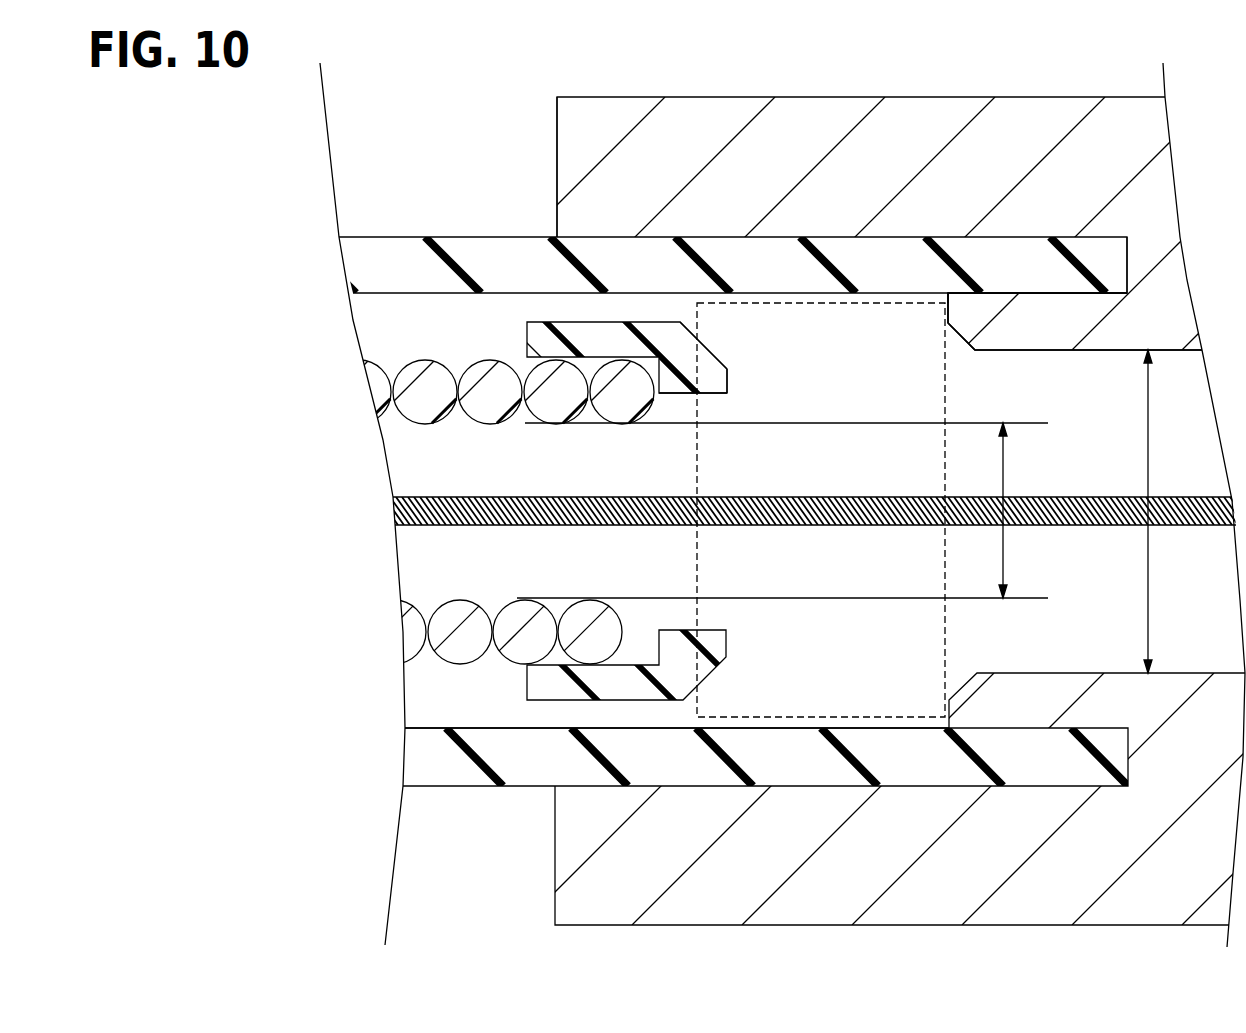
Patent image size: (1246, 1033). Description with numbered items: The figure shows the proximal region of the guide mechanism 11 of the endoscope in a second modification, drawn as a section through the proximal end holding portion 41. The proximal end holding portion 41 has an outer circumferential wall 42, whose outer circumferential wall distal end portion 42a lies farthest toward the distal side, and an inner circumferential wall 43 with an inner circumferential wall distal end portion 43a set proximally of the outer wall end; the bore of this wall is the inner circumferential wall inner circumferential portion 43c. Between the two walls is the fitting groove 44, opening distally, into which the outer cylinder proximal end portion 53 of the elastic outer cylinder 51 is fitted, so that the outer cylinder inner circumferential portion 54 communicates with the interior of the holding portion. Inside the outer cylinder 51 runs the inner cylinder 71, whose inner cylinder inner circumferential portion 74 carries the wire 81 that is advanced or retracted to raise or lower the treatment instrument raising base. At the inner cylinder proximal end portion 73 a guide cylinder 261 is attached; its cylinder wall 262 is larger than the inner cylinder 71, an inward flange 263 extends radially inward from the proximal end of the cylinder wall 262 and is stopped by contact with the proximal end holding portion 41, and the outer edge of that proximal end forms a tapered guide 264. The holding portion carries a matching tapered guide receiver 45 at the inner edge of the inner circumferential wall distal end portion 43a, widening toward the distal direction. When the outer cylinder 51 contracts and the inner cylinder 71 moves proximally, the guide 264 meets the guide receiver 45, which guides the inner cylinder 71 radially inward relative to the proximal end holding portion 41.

The guide mechanism 11 is at (378, 236).
The proximal end holding portion 41 is at (557, 101).
The outer circumferential wall 42 is at (557, 130).
The outer circumferential wall distal end portion 42a is at (557, 192).
The inner circumferential wall 43 is at (1185, 352).
The inner circumferential wall distal end portion 43a is at (945, 307).
The inner circumferential wall inner circumferential portion 43c is at (1169, 511).
The fitting groove 44 is at (943, 300).
The guide receiver 45 is at (960, 337).
The cylinder wall 262 is at (565, 322).
The guide 264 is at (712, 352).
The guide cylinder 261 is at (727, 380).
The inward flange 263 is at (712, 394).
The inner cylinder inner circumferential portion 74 is at (782, 510).
The wire 81 is at (698, 497).
The inner cylinder 71 is at (468, 600).
The inner cylinder proximal end portion 73 is at (624, 628).
The outer cylinder 51 is at (472, 786).
The outer cylinder proximal end portion 53 is at (1130, 728).
The outer cylinder inner circumferential portion 54 is at (842, 728).